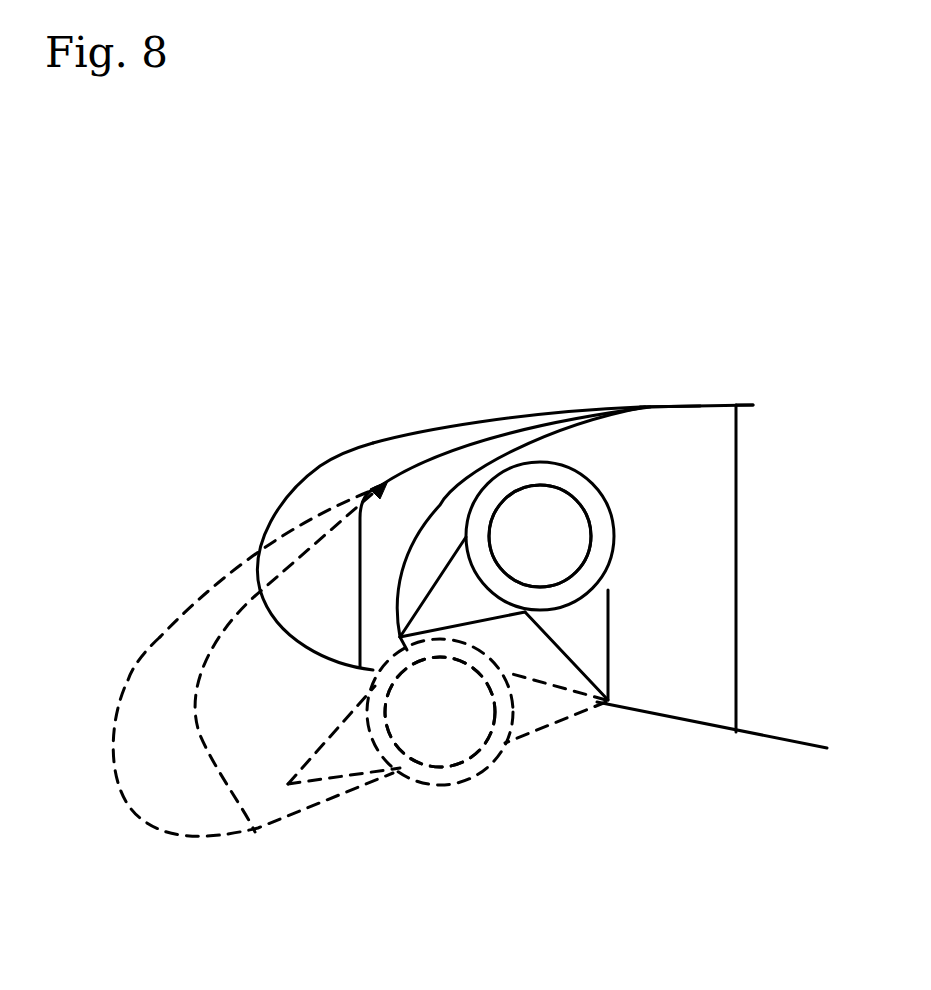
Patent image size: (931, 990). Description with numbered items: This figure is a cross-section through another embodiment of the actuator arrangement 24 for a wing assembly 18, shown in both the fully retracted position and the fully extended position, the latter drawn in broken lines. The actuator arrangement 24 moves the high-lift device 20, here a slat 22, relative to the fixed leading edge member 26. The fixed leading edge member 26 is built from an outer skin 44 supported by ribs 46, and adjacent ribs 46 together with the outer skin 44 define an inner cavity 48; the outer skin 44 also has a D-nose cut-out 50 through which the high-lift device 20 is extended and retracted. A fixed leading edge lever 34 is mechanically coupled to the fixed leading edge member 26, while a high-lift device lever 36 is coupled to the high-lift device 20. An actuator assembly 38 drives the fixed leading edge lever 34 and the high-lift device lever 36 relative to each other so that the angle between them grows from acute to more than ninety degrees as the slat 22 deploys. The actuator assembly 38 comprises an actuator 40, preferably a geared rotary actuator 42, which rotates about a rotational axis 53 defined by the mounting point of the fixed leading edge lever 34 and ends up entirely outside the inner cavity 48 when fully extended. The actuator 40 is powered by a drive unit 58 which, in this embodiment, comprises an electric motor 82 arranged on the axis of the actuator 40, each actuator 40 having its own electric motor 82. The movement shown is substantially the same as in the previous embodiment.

The wing assembly 18 is at (268, 275).
The high-lift device 20 is at (395, 440).
The slat 22 is at (317, 481).
The actuator arrangement 24 is at (548, 318).
The fixed leading edge member 26 is at (705, 418).
The fixed leading edge lever 34 is at (605, 632).
The high-lift device lever 36 is at (437, 590).
The actuator assembly 38 is at (615, 440).
The actuator 40 is at (593, 493).
The geared rotary actuator 42 is at (603, 533).
The outer skin 44 is at (757, 738).
The rib 46 is at (728, 482).
The inner cavity 48 is at (715, 585).
The D-nose cut-out 50 is at (505, 795).
The rotational axis 53 is at (610, 700).
The drive unit 58 is at (527, 500).
The electric motor 82 is at (560, 502).